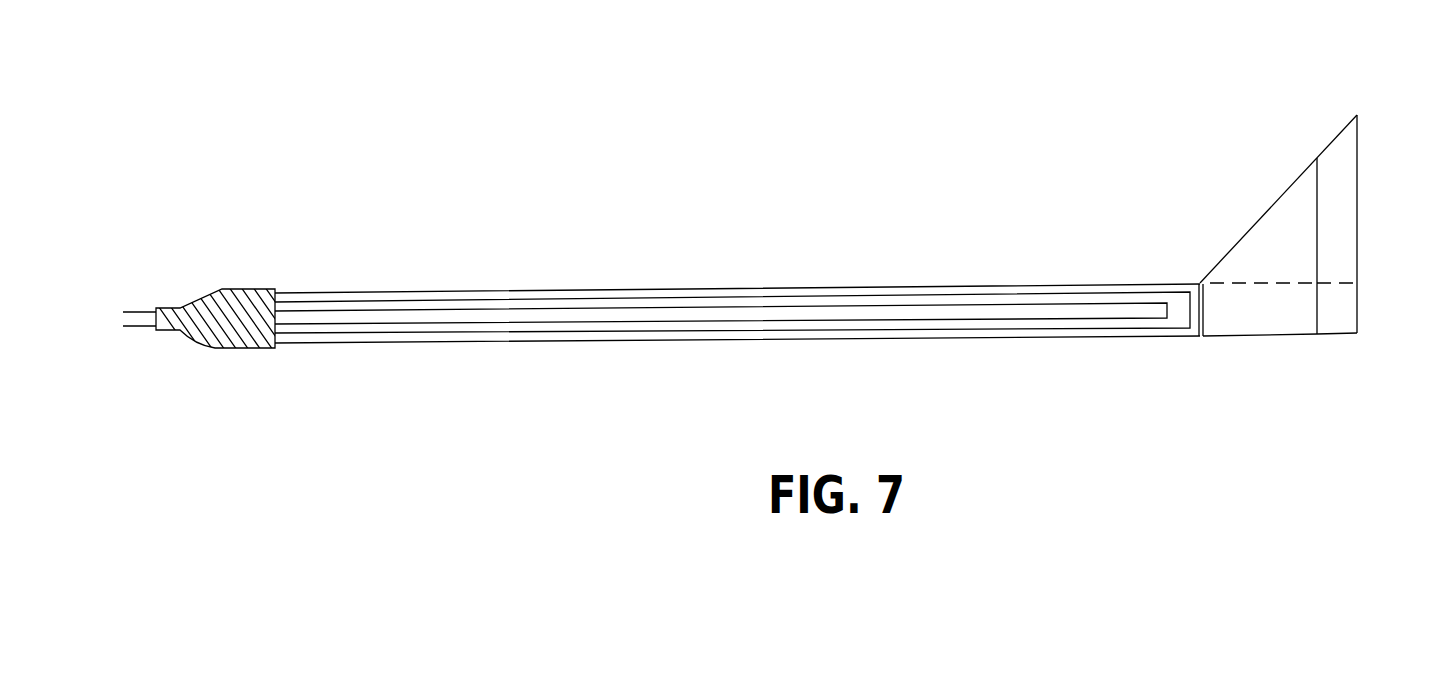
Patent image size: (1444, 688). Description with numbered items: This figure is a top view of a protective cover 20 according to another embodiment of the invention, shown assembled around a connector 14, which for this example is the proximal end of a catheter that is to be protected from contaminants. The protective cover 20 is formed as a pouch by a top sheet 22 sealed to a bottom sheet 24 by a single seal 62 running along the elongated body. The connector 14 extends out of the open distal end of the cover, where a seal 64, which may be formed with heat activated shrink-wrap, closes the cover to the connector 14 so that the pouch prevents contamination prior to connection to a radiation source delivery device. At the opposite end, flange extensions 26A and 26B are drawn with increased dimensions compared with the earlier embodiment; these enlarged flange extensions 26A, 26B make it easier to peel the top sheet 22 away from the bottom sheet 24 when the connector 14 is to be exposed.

The protective cover 20 is at (962, 128).
The connector 14 is at (580, 313).
The seal 62 is at (725, 292).
The seal 64 is at (210, 347).
The top sheet 22 is at (1230, 312).
The bottom sheet 24 is at (1335, 305).
The flange extension 26A is at (1258, 258).
The flange extension 26B is at (1333, 208).